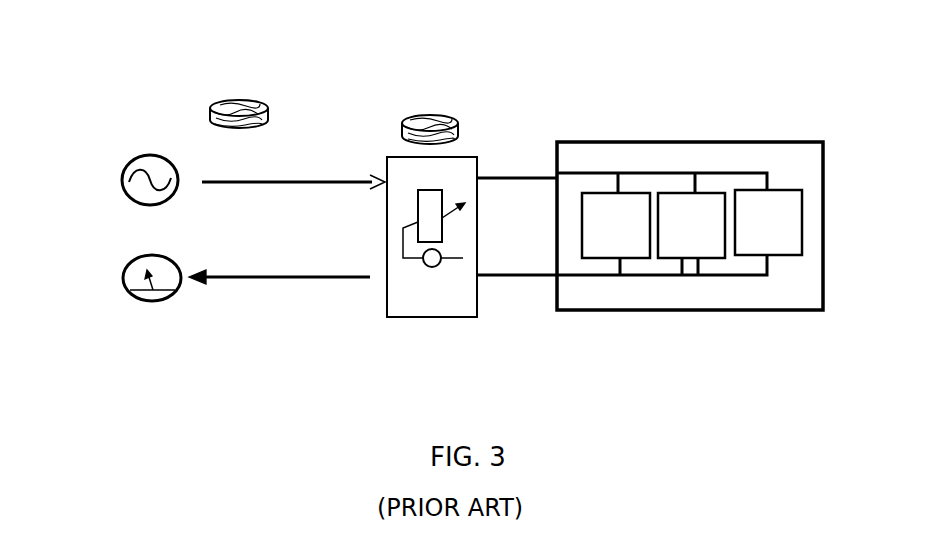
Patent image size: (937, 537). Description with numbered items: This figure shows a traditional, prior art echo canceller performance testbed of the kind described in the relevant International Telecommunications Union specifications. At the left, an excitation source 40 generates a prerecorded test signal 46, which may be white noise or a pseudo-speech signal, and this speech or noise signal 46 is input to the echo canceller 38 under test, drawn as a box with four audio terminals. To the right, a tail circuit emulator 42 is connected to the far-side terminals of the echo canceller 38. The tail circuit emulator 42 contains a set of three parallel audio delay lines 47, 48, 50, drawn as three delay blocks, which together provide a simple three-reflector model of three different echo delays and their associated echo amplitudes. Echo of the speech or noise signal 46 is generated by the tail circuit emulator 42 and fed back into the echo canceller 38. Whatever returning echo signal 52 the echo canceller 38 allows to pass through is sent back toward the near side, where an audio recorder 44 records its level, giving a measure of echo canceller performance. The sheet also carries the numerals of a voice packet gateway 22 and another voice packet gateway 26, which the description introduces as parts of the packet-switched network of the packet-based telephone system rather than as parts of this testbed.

The voice packet gateway 22 is at (231, 98).
The voice packet gateway 26 is at (443, 112).
The echo canceller 38 is at (396, 157).
The excitation source 40 is at (143, 155).
The tail circuit emulator 42 is at (725, 206).
The audio recorder 44 is at (140, 302).
The test signal 46 is at (243, 187).
The audio delay line 47 is at (596, 258).
The audio delay line 48 is at (680, 258).
The audio delay line 50 is at (788, 255).
The returning echo signal 52 is at (244, 285).